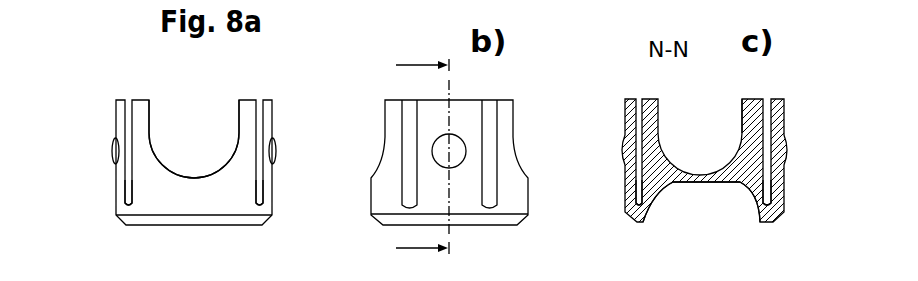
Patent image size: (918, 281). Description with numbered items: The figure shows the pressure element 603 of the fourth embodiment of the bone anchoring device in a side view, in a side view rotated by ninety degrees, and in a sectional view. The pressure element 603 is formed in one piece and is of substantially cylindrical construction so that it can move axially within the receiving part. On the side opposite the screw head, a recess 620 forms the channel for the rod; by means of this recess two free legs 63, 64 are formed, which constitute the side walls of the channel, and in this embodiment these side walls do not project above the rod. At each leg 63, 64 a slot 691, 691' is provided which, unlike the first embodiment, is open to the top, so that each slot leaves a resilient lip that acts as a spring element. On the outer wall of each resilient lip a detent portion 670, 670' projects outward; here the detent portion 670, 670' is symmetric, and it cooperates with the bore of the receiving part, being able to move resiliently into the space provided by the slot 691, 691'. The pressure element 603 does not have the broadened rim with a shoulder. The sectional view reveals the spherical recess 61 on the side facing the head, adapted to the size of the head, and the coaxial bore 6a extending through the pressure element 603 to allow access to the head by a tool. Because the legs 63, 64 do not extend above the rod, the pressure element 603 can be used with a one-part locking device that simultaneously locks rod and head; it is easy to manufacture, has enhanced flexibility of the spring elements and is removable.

In FIG. 8a, the pressure element 603 is at (156, 90).
In FIG. 8b, the pressure element 603 is at (377, 93).
In FIG. 8c, the pressure element 603 is at (622, 93).
In FIG. 8a, the recess 620 is at (233, 107).
In FIG. 8c, the recess 620 is at (742, 109).
In FIG. 8a, the leg 63 is at (142, 131).
In FIG. 8a, the leg 64 is at (244, 125).
In FIG. 8a, the detent portion 670 is at (83, 152).
In FIG. 8b, the detent portion 670 is at (501, 146).
In FIG. 8a, the detent portion 670' is at (307, 152).
In FIG. 8a, the slot 691 is at (96, 203).
In FIG. 8b, the slot 691 is at (413, 154).
In FIG. 8c, the slot 691 is at (600, 196).
In FIG. 8a, the slot 691' is at (297, 203).
In FIG. 8c, the slot 691' is at (806, 188).
In FIG. 8c, the coaxial bore 6a is at (673, 184).
In FIG. 8c, the spherical recess 61 is at (750, 200).